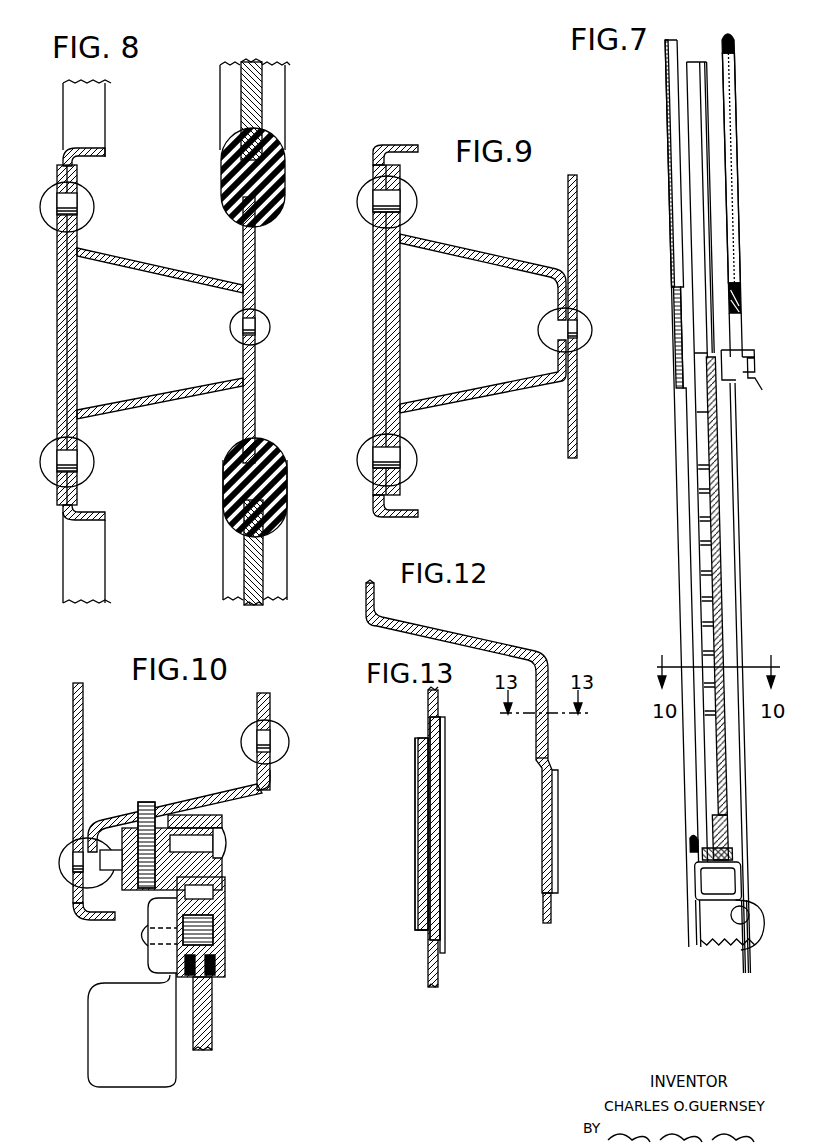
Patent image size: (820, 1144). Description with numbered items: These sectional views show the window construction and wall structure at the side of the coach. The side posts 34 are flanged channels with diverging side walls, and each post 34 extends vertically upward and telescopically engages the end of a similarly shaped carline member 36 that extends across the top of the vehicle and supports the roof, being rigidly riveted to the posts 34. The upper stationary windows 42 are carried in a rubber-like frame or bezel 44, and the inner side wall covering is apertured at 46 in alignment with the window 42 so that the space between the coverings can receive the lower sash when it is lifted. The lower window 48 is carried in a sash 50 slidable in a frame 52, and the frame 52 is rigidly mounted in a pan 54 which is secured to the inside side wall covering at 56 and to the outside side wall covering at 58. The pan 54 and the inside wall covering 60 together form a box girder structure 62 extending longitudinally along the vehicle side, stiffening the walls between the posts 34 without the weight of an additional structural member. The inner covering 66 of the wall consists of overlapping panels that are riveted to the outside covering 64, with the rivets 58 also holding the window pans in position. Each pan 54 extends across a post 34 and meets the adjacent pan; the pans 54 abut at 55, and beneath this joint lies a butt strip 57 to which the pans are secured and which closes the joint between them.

In FIG. 9, the side post 34 is at (500, 282).
In FIG. 10, the side post 34 is at (190, 808).
In FIG. 8, the carline member 36 is at (132, 256).
In FIG. 9, the carline member 36 is at (476, 410).
In FIG. 8, the window 42 is at (262, 98).
In FIG. 7, the window 42 is at (742, 224).
In FIG. 8, the bezel 44 is at (280, 172).
In FIG. 7, the bezel 44 is at (738, 43).
In FIG. 8, the aperture 46 is at (104, 100).
In FIG. 7, the aperture 46 is at (674, 236).
In FIG. 7, the lower window 48 is at (715, 785).
In FIG. 10, the lower window 48 is at (212, 1035).
In FIG. 7, the sash 50 is at (735, 830).
In FIG. 10, the sash 50 is at (226, 965).
In FIG. 7, the frame 52 is at (708, 823).
In FIG. 10, the frame 52 is at (230, 850).
In FIG. 7, the pan 54 is at (700, 870).
In FIG. 10, the pan 54 is at (272, 792).
In FIG. 12, the pan 54 is at (490, 642).
In FIG. 13, the pan 54 is at (441, 768).
In FIG. 13, the abutment 55 is at (432, 836).
In FIG. 7, the attachment to inside covering 56 is at (690, 850).
In FIG. 12, the butt strip 57 is at (540, 757).
In FIG. 13, the butt strip 57 is at (418, 863).
In FIG. 7, the rivets 58 is at (758, 915).
In FIG. 12, the rivets 58 is at (557, 826).
In FIG. 7, the inside wall covering 60 is at (705, 903).
In FIG. 7, the box girder structure 62 is at (724, 886).
In FIG. 8, the outside covering 64 is at (256, 300).
In FIG. 9, the outside covering 64 is at (577, 436).
In FIG. 7, the outside covering 64 is at (747, 943).
In FIG. 12, the outside covering 64 is at (554, 908).
In FIG. 13, the outside covering 64 is at (433, 837).
In FIG. 8, the inner covering 66 is at (57, 332).
In FIG. 9, the inner covering 66 is at (373, 366).
In FIG. 10, the inner covering 66 is at (85, 906).